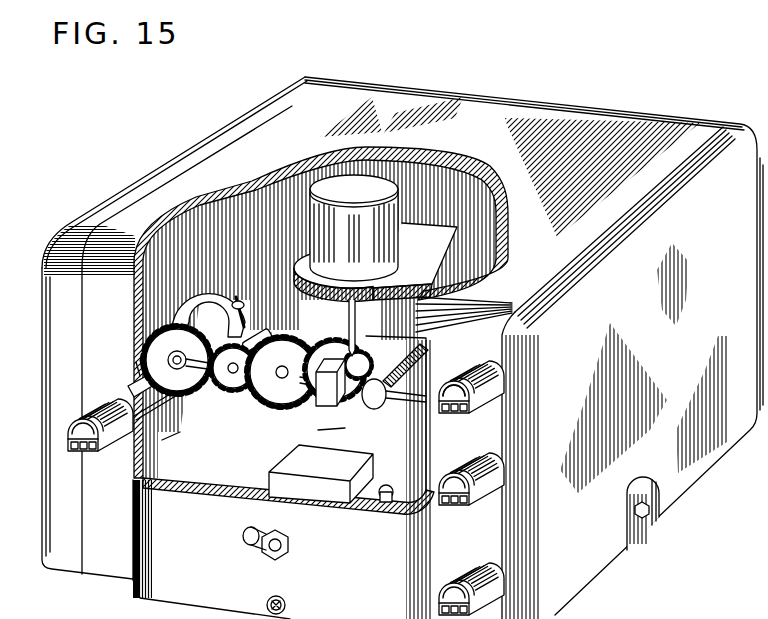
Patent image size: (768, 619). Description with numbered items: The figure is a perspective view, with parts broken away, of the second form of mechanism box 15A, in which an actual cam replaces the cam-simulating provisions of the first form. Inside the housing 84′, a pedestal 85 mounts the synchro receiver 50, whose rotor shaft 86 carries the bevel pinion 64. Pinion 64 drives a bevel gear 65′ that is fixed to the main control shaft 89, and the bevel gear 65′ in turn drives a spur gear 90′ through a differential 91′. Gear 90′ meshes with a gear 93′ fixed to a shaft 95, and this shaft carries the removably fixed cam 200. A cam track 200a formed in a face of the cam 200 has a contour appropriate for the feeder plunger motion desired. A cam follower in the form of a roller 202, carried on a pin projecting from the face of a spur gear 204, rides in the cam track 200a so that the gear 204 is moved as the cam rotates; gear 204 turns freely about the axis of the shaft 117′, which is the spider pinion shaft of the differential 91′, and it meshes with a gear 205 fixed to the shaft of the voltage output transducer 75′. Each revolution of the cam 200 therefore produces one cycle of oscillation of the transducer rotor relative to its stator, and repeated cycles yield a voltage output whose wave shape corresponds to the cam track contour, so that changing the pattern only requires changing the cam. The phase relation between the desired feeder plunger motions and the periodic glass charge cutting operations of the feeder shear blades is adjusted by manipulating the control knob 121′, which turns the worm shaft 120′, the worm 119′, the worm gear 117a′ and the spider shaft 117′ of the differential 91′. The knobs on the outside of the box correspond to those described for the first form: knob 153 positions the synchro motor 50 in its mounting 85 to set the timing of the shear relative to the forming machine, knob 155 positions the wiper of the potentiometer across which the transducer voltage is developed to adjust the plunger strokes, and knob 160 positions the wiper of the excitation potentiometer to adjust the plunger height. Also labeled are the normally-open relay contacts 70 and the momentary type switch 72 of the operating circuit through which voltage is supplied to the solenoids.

The mechanism box 15A is at (418, 75).
The housing 84′ is at (218, 162).
The synchro receiver 50 is at (354, 228).
The pedestal 85 is at (420, 255).
The gear 93′ is at (296, 286).
The cam 200 is at (238, 290).
The cam track 200a is at (244, 304).
The worm 119′ is at (246, 333).
The shaft 95 is at (238, 367).
The cam follower roller 202 is at (150, 352).
The spur gear 204 is at (147, 369).
The gear 205 is at (133, 386).
The worm shaft 120′ is at (133, 391).
The control knob 121′ is at (70, 427).
The spider pinion shaft 117′ is at (197, 413).
The worm gear 117a′ is at (180, 437).
The spur gear 90′ is at (278, 421).
The voltage output transducer 75′ is at (173, 445).
The differential 91′ is at (313, 437).
The bevel pinion 64 is at (333, 415).
The bevel gear 65′ is at (366, 419).
The main control shaft 89 is at (404, 401).
The rotor shaft 86 is at (427, 343).
The knob 155 is at (453, 380).
The control knob 153 is at (459, 455).
The control knob 160 is at (466, 562).
The normally-open contacts 70 is at (321, 474).
The momentary type switch 72 is at (253, 552).